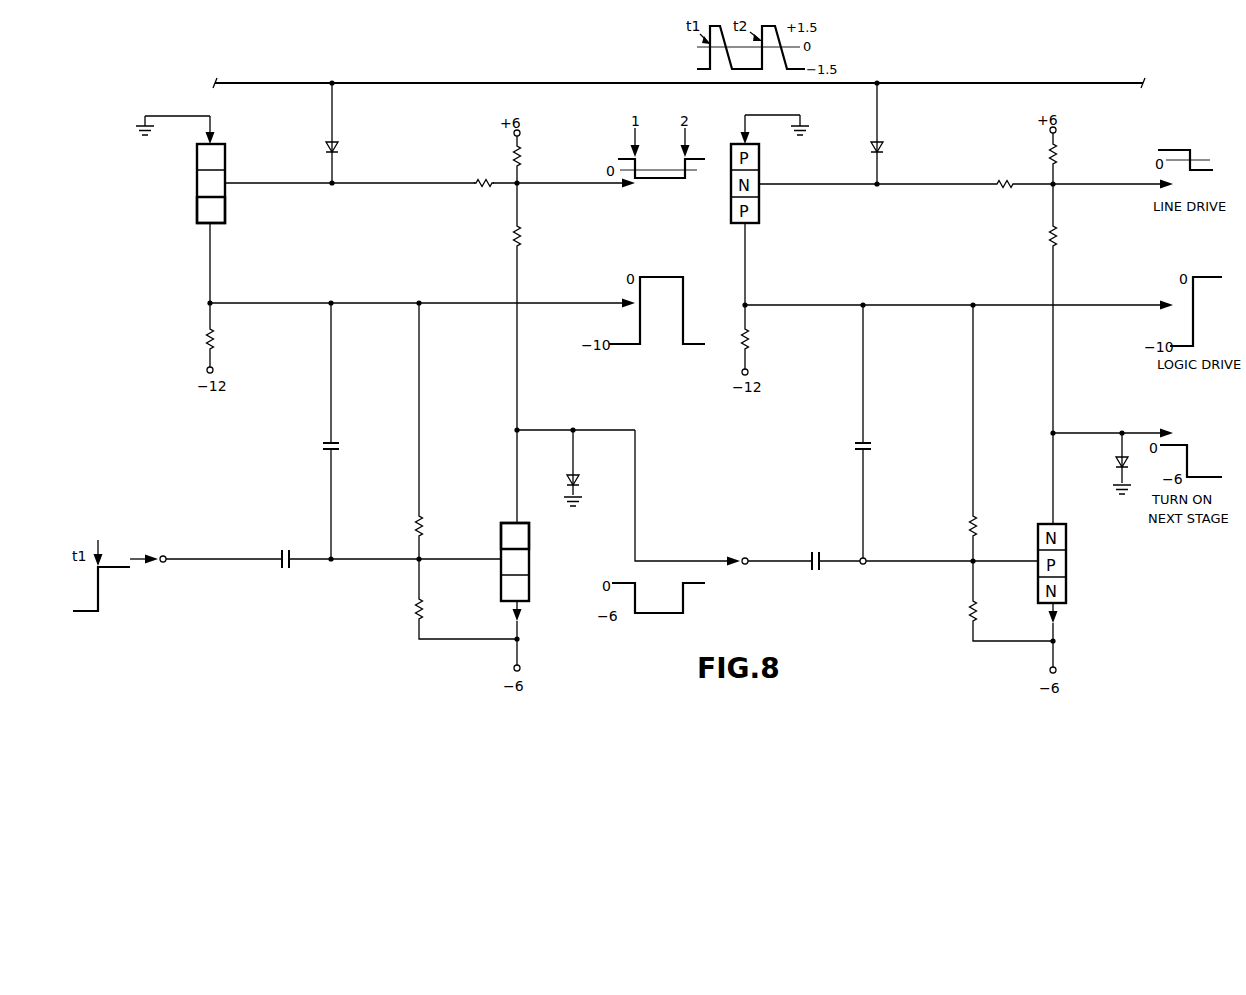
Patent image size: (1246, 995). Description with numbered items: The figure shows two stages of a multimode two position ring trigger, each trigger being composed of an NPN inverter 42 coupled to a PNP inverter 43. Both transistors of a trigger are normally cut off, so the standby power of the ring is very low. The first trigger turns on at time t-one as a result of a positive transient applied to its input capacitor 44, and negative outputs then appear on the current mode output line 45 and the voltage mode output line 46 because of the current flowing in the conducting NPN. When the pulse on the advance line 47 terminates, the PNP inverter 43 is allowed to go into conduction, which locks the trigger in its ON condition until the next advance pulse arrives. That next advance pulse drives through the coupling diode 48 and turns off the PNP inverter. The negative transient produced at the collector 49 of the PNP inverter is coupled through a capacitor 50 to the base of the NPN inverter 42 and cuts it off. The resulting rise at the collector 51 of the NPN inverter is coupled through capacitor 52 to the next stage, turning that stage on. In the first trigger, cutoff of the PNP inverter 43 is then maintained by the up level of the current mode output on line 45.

The NPN inverter 42 is at (492, 578).
The PNP inverter 43 is at (232, 175).
The input capacitor 44 is at (284, 552).
The current mode output line 45 is at (545, 183).
The voltage mode output line 46 is at (630, 550).
The advance line 47 is at (244, 87).
The coupling diode 48 is at (351, 133).
The collector of the PNP inverter 49 is at (197, 210).
The capacitor 50 is at (340, 443).
The collector of the NPN inverter 51 is at (501, 528).
The capacitor 52 is at (812, 553).